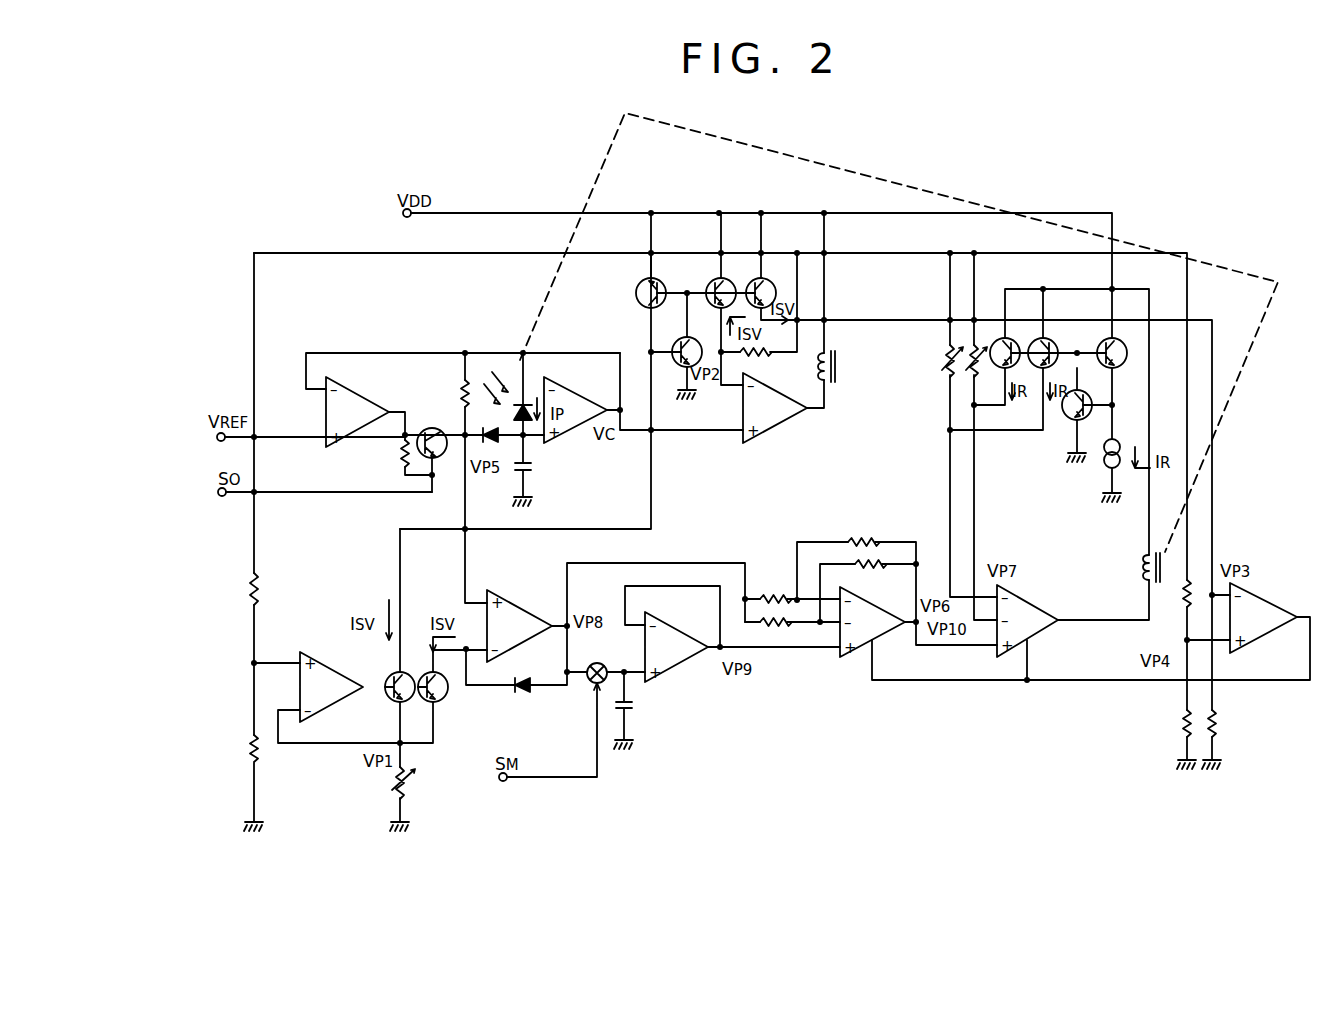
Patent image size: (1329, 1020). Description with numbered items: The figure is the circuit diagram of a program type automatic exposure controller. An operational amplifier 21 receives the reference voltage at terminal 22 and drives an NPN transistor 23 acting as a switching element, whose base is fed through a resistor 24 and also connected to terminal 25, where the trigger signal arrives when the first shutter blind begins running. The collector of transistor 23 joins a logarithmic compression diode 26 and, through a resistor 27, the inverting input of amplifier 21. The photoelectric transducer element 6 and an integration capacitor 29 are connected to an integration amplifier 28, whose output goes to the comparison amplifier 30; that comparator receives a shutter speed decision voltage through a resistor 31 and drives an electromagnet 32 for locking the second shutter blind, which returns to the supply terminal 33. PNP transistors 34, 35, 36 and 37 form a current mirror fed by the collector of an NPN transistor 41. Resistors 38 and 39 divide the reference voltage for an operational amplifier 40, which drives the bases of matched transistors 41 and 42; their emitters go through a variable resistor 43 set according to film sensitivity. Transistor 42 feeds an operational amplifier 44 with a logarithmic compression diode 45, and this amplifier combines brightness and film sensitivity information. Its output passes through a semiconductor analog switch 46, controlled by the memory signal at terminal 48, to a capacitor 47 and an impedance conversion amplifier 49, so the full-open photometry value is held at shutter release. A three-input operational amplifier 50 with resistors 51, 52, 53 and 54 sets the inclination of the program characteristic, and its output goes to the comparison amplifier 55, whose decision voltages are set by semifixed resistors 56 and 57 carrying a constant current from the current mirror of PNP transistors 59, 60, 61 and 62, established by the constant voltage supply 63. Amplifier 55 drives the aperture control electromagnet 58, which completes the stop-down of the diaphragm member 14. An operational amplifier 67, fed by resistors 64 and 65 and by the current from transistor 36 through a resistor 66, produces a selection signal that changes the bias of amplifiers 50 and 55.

The photoelectric transducer element 6 is at (524, 390).
The diaphragm member 14 is at (509, 424).
The operational amplifier 21 is at (347, 400).
The terminal 22 is at (221, 441).
The NPN transistor 23 is at (432, 428).
The resistor 24 is at (400, 453).
The terminal 25 is at (221, 496).
The diode 26 is at (489, 438).
The resistor 27 is at (461, 394).
The operational amplifier 28 is at (578, 405).
The capacitor 29 is at (532, 467).
The operational amplifier 30 is at (785, 425).
The resistor 31 is at (755, 356).
The electromagnet 32 is at (839, 370).
The terminal 33 is at (408, 217).
The PNP transistor 34 is at (644, 284).
The PNP transistor 35 is at (707, 282).
The PNP transistor 36 is at (753, 282).
The PNP transistor 37 is at (682, 337).
The resistor 38 is at (258, 590).
The resistor 39 is at (258, 752).
The operational amplifier 40 is at (330, 679).
The NPN transistor 41 is at (404, 675).
The NPN transistor 42 is at (447, 694).
The variable resistor 43 is at (408, 785).
The operational amplifier 44 is at (508, 607).
The diode 45 is at (523, 680).
The semiconductor analog switch 46 is at (598, 663).
The capacitor 47 is at (634, 705).
The terminal 48 is at (504, 781).
The operational amplifier 49 is at (675, 637).
The three-input type operational amplifier 50 is at (880, 636).
The resistor 51 is at (779, 578).
The resistor 52 is at (861, 541).
The resistor 53 is at (770, 624).
The resistor 54 is at (862, 568).
The three-input type operational amplifier 55 is at (1035, 607).
The semifixed resistor 56 is at (945, 350).
The semifixed resistor 57 is at (965, 365).
The electromagnet 58 is at (1144, 570).
The PNP transistor 59 is at (1011, 347).
The PNP transistor 60 is at (1052, 347).
The PNP transistor 61 is at (1117, 345).
The PNP transistor 62 is at (1068, 416).
The constant voltage supply 63 is at (1120, 445).
The resistor 64 is at (1183, 595).
The resistor 65 is at (1183, 717).
The resistor 66 is at (1216, 717).
The operational amplifier 67 is at (1260, 600).